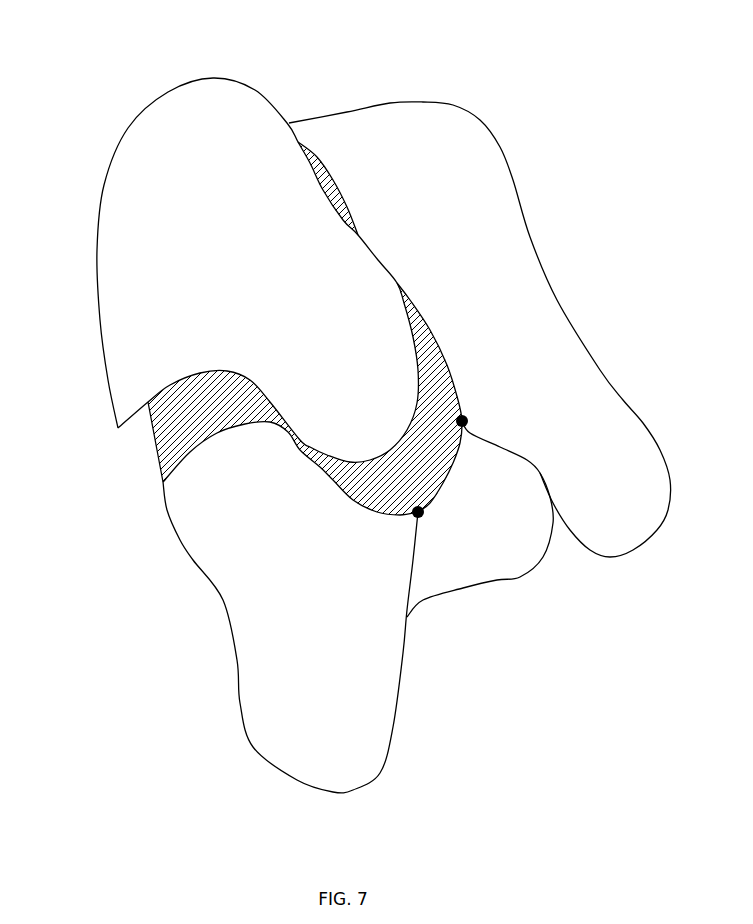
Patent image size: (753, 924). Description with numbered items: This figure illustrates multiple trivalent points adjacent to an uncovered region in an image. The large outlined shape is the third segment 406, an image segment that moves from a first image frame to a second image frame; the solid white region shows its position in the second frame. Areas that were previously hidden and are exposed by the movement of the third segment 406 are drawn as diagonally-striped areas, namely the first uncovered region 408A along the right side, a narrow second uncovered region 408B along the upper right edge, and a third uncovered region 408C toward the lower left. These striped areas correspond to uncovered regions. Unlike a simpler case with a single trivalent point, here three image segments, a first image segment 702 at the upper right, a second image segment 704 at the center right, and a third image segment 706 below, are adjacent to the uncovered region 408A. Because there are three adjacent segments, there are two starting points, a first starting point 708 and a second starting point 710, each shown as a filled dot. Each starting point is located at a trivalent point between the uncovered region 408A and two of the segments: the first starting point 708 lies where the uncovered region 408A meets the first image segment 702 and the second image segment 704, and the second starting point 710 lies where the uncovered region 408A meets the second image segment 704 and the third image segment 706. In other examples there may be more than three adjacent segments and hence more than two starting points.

The third segment 406 is at (258, 270).
The image segment 702 is at (480, 329).
The image segment 704 is at (480, 519).
The image segment 706 is at (290, 607).
The starting point 708 is at (462, 421).
The starting point 710 is at (418, 512).
The first uncovered region 408A is at (433, 327).
The uncovered region 408B is at (297, 142).
The uncovered region 408C is at (153, 457).